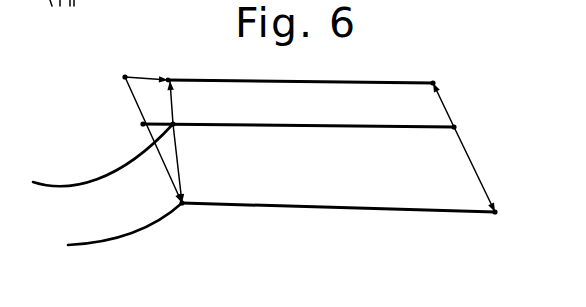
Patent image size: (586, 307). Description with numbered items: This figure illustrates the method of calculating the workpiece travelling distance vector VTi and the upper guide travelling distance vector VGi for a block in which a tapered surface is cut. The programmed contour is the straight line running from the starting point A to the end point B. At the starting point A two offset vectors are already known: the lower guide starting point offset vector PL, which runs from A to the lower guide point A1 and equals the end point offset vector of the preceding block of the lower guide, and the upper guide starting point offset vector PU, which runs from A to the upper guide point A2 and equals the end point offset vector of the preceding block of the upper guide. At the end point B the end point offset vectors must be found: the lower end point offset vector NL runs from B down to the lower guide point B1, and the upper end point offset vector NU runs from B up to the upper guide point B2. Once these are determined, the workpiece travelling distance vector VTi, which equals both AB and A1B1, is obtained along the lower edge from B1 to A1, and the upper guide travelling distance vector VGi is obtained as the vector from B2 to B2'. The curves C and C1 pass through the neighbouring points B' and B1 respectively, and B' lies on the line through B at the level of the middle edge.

The end point of upper guide travelling distance vector B2' is at (115, 65).
The upper guide end point B2 is at (176, 66).
The upper guide starting point A2 is at (441, 70).
The point B prime B' is at (132, 128).
The end point of programmed contour B is at (181, 137).
The starting point of programmed contour A is at (465, 128).
The lower guide end point B1 is at (189, 217).
The lower guide starting point A1 is at (508, 215).
The end point offset vector to upper guide NU is at (186, 102).
The end point offset vector to lower guide NL is at (190, 163).
The starting point offset vector for upper guide PU is at (454, 105).
The starting point offset vector for lower guide PL is at (478, 169).
The curve C is at (93, 159).
The curve C1 is at (109, 230).
The upper guide travelling distance vector VGi is at (146, 76).
The workpiece travelling distance vector VTi is at (380, 208).